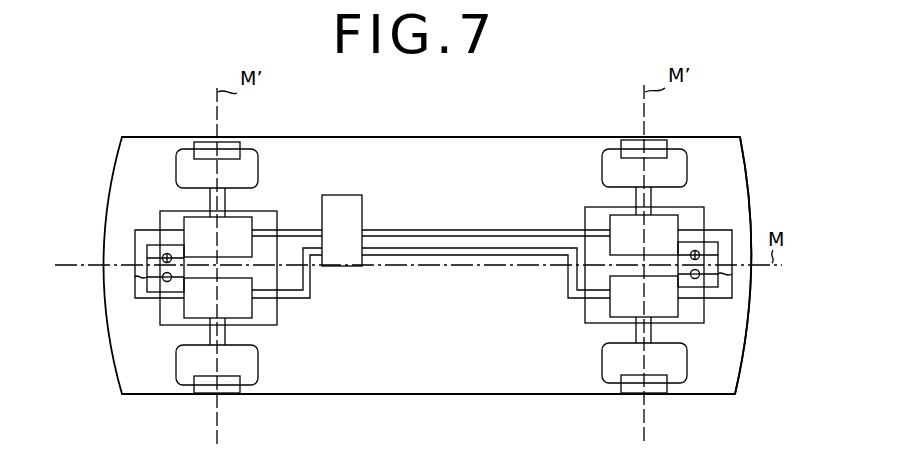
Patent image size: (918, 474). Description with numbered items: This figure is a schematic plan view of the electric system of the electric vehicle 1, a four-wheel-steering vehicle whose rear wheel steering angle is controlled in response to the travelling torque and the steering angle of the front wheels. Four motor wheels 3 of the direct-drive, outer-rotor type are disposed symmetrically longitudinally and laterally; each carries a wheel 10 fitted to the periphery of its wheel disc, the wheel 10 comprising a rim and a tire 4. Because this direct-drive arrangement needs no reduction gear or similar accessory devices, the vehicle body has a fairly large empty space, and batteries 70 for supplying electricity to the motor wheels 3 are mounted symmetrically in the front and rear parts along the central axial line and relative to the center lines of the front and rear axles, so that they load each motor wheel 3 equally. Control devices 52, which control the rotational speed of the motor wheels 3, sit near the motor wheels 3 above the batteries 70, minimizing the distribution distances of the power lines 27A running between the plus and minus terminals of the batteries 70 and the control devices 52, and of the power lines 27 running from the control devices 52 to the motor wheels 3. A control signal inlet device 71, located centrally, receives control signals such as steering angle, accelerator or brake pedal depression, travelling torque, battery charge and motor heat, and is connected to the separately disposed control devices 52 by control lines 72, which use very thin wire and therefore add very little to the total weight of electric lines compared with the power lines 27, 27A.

The electric vehicle 1 is at (481, 137).
The motor wheel 3 is at (239, 138).
The tire 4 is at (253, 160).
The wheel 10 is at (752, 340).
The power line 27 is at (228, 197).
The power line 27A is at (135, 299).
The control device 52 is at (198, 223).
The battery 70 is at (277, 314).
The control signal inlet device 71 is at (363, 212).
The control line 72 is at (288, 250).